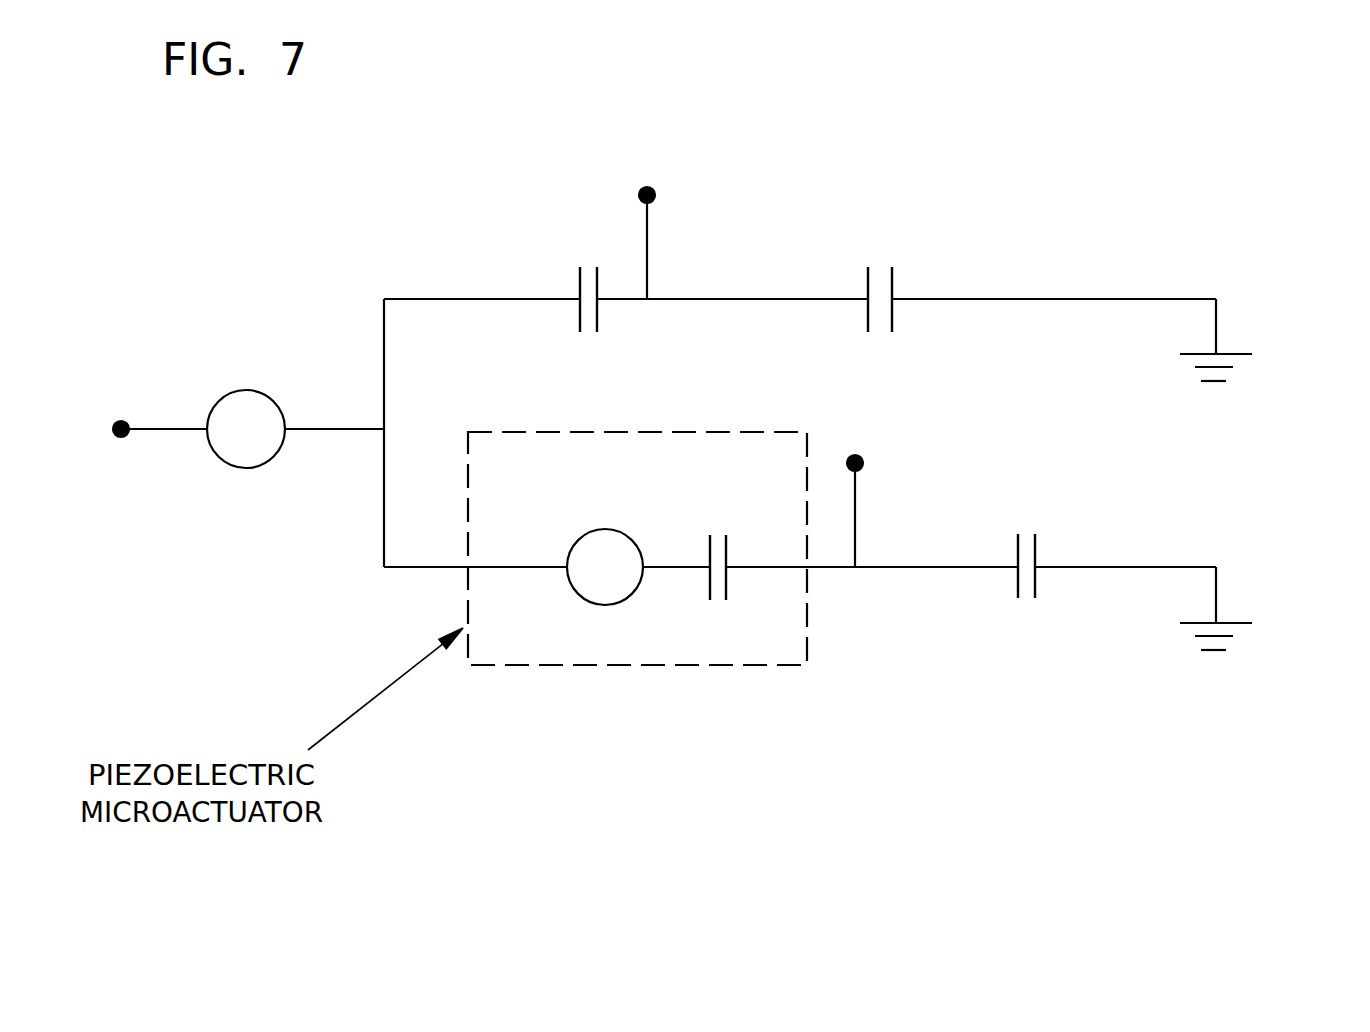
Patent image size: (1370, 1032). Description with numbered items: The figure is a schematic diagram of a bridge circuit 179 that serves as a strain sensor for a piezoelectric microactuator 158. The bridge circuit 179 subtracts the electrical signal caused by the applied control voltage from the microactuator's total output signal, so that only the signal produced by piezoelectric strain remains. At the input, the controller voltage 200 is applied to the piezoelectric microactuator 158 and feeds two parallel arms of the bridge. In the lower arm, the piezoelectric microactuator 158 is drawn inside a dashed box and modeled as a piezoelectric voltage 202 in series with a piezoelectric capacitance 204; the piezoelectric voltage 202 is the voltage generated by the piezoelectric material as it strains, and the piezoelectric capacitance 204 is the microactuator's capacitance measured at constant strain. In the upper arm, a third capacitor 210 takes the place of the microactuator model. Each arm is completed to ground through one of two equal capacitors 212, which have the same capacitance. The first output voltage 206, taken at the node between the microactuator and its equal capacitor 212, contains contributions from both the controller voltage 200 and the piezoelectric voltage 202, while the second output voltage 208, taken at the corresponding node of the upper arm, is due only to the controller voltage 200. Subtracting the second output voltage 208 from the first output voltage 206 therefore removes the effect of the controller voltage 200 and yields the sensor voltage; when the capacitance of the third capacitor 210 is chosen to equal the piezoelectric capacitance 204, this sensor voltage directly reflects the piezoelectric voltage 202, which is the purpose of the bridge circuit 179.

The bridge circuit 179 is at (1221, 190).
The voltage v_c 200 is at (252, 390).
The voltage v_p 202 is at (583, 533).
The capacitance C_p 204 is at (708, 545).
The output voltage v_1 206 is at (863, 458).
The voltage v_2 208 is at (642, 192).
The capacitor C_3 210 is at (580, 278).
The capacitors C_2 212 is at (892, 278).
The piezoelectric microactuator 158 is at (810, 650).